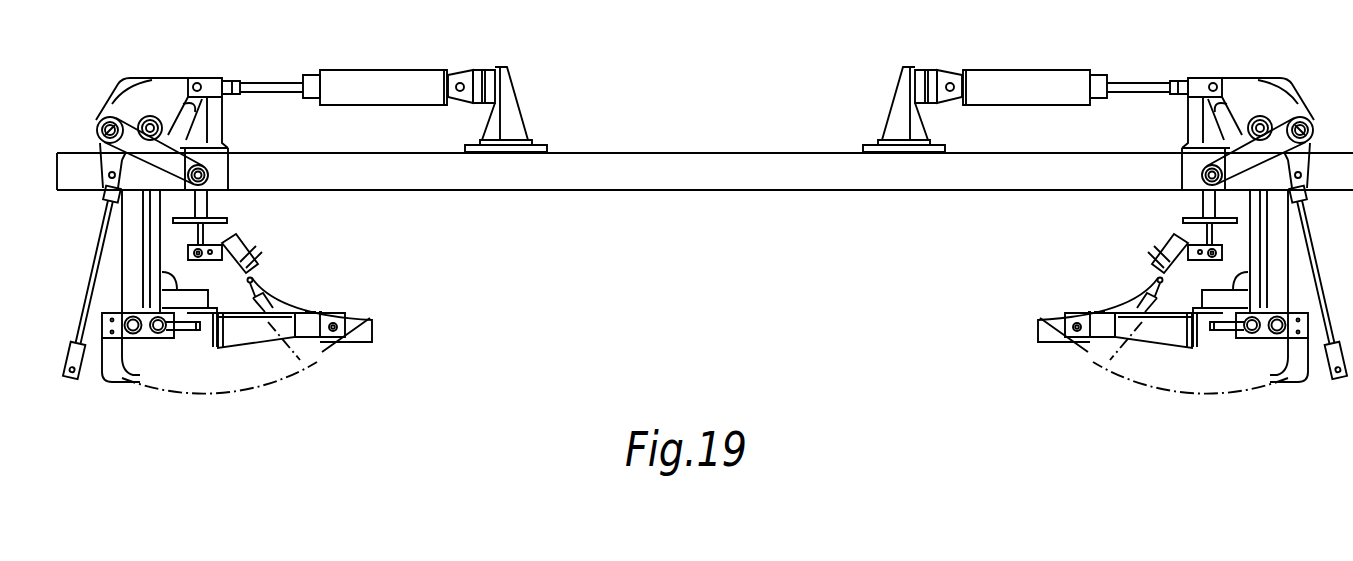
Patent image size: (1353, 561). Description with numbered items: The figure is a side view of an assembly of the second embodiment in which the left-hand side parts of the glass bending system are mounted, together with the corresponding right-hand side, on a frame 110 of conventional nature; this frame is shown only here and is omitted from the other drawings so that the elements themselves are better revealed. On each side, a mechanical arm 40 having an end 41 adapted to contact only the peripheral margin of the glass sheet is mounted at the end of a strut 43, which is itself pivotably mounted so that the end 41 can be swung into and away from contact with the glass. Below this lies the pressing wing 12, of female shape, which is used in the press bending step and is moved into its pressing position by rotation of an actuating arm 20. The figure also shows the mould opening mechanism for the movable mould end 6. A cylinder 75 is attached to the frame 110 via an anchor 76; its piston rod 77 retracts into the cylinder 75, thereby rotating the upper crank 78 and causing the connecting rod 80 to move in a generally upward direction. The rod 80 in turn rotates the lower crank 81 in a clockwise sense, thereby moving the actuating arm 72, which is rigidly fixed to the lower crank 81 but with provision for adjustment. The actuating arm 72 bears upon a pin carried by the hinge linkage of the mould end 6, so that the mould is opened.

The mould end 6 is at (372, 328).
The pressing wing 12 is at (315, 343).
The actuating arm 20 is at (150, 226).
The mechanical arm 40 is at (232, 245).
The end 41 is at (262, 280).
The strut 43 is at (205, 202).
The actuating arm 72 is at (188, 330).
The cylinder 75 is at (383, 75).
The anchor 76 is at (507, 97).
The piston rod 77 is at (262, 82).
The upper crank 78 is at (127, 108).
The connecting rod 80 is at (88, 282).
The lower crank 81 is at (106, 375).
The frame 110 is at (608, 163).